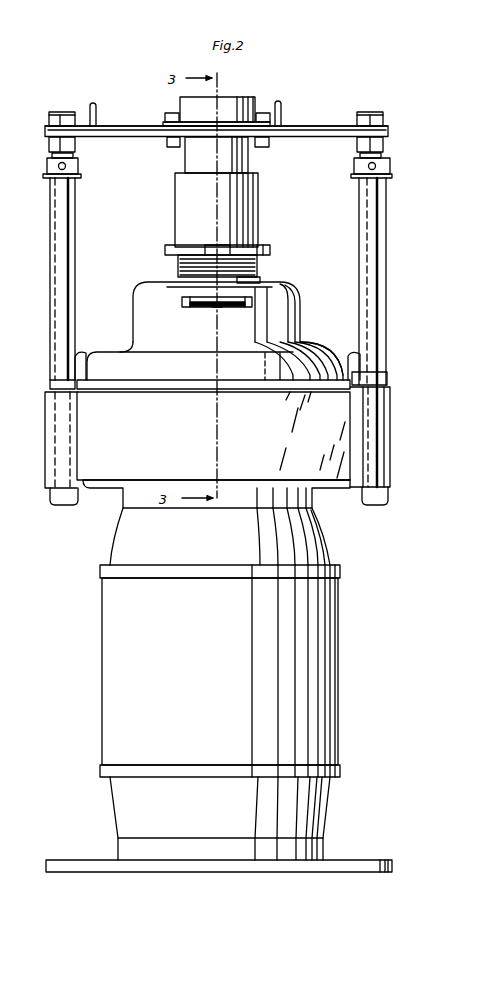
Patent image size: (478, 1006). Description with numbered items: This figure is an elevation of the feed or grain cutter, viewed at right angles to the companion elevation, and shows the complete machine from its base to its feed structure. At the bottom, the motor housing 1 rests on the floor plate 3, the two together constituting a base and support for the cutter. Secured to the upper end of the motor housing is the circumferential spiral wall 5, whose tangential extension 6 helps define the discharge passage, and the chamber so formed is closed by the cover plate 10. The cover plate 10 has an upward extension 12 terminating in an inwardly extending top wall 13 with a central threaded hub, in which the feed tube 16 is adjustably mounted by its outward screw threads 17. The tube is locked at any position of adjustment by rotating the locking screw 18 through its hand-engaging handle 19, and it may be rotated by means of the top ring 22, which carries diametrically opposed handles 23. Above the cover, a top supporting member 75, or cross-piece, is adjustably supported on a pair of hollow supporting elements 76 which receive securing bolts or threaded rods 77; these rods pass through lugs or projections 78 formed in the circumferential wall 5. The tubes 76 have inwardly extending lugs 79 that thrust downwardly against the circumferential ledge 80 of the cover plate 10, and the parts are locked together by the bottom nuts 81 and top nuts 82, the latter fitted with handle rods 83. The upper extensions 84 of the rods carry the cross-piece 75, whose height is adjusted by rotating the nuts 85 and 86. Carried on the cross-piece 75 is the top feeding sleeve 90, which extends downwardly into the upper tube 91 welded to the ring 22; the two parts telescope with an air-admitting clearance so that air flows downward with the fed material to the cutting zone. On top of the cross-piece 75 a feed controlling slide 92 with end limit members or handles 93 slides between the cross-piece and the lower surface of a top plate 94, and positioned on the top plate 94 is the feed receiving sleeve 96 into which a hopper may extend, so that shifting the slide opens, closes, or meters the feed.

The motor housing 1 is at (339, 657).
The floor plate 3 is at (342, 861).
The circumferential spiral wall 5 is at (77, 455).
The tangential extension 6 is at (322, 463).
The cover plate 10 is at (310, 348).
The upward extension 12 is at (302, 315).
The top wall 13 is at (282, 284).
The feed tube 16 is at (180, 273).
The outward screw threads 17 is at (258, 267).
The locking screw 18 is at (212, 307).
The hand-engaging handle 19 is at (182, 300).
The top ring 22 is at (168, 251).
The handles 23 is at (208, 250).
The top supporting member 75 is at (312, 128).
The supporting elements 76 is at (75, 223).
The securing bolts or threaded rods 77 is at (52, 261).
The lugs or projections 78 is at (47, 438).
The inwardly extending lugs 79 is at (86, 357).
The circumferential ledge 80 is at (107, 387).
The bottom nuts 81 is at (50, 498).
The top nuts 82 is at (78, 171).
The handle rods 83 is at (77, 165).
The upper extensions 84 is at (52, 157).
The nuts 85 is at (49, 143).
The nuts 86 is at (50, 117).
The top feeding sleeve 90 is at (250, 155).
The upper tube 91 is at (259, 210).
The feed controlling slide 92 is at (115, 126).
The end limit members or handles 93 is at (93, 103).
The top plate 94 is at (165, 126).
The feed receiving sleeve 96 is at (238, 99).